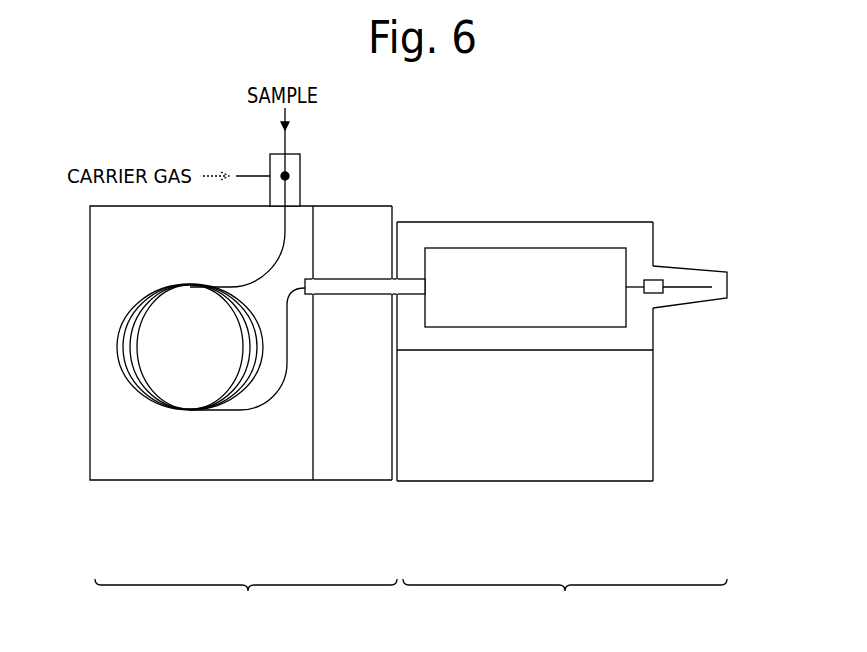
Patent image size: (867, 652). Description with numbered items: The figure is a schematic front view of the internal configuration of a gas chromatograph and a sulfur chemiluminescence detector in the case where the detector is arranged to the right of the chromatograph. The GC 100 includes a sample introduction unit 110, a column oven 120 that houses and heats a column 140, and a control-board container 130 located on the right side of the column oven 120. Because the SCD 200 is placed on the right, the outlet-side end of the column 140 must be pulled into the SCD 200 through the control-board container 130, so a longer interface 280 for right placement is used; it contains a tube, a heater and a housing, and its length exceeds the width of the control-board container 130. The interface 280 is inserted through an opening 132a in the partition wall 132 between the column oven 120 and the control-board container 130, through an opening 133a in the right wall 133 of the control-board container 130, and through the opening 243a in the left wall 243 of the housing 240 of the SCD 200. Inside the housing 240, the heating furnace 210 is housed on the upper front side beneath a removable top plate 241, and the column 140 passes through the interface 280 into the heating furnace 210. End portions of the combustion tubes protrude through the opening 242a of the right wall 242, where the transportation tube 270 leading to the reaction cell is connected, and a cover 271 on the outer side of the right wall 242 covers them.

The GC 100 is at (246, 602).
The sample introduction unit 110 is at (302, 161).
The column oven 120 is at (310, 516).
The control-board container 130 is at (393, 516).
The partition wall 132 is at (312, 438).
The opening 132a is at (315, 278).
The right wall 133 is at (391, 440).
The opening 133a is at (388, 275).
The column 140 is at (152, 293).
The SCD 200 is at (565, 602).
The heating furnace 210 is at (538, 248).
The housing 240 is at (653, 222).
The top plate 241 is at (488, 222).
The right wall 242 is at (655, 448).
The opening 242a is at (657, 275).
The left wall 243 is at (398, 440).
The opening 243a is at (400, 275).
The transportation tube 270 is at (678, 292).
The cover 271 is at (727, 285).
The interface 280 is at (362, 296).